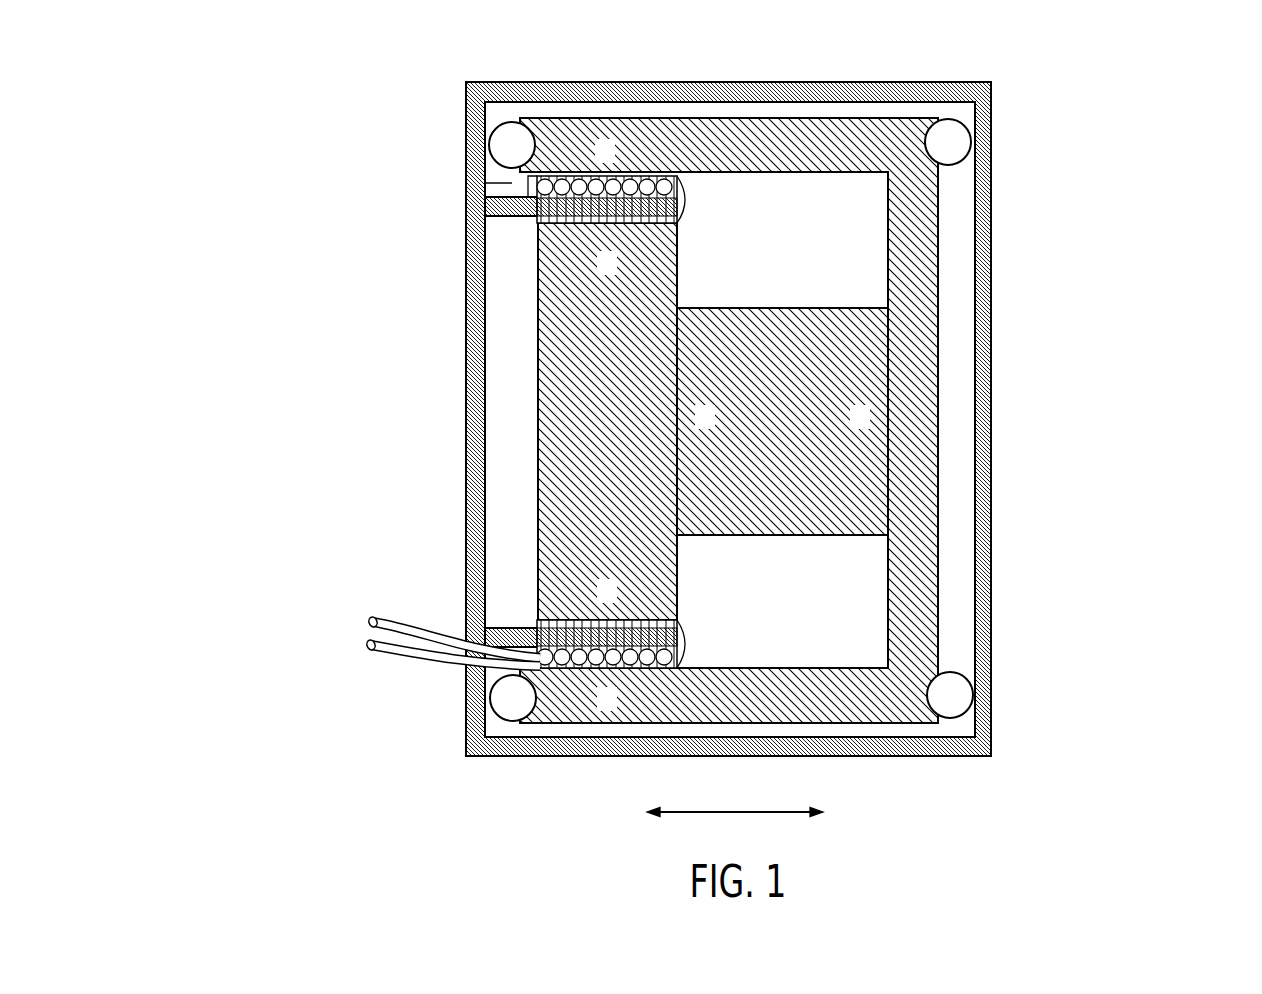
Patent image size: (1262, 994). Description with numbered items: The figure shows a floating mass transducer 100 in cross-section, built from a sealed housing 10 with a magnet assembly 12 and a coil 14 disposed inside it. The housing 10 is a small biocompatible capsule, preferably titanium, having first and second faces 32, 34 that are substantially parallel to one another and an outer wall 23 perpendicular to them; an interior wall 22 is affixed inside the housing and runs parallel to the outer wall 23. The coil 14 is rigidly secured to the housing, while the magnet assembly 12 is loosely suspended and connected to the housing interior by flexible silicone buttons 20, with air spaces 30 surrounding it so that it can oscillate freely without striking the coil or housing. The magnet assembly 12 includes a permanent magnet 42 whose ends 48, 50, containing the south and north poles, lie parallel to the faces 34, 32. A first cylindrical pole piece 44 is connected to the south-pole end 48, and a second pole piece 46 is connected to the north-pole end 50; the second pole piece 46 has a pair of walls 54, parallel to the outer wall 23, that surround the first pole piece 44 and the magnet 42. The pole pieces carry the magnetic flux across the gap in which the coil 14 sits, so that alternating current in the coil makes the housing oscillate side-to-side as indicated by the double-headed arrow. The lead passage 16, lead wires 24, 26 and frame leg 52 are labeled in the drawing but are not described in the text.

The transducer 100 is at (697, 425).
The sealed housing 10 is at (732, 424).
The magnet assembly 12 is at (960, 593).
The coil 14 is at (575, 178).
The lead opening 16 is at (485, 183).
The silicone buttons 20 is at (955, 143).
The interior wall 22 is at (506, 217).
The outer wall 23 is at (712, 82).
The lead wire 24 is at (380, 650).
The lead wire 26 is at (460, 670).
The air spaces 30 is at (872, 108).
The first face 32 is at (992, 108).
The second face 34 is at (466, 100).
The permanent magnet 42 is at (797, 515).
The first cylindrical pole piece 44 is at (575, 493).
The second pole piece 46 is at (816, 420).
The end containing the south pole 48 is at (686, 301).
The end containing the north pole 50 is at (880, 301).
The frame leg 52 is at (920, 225).
The walls 54 is at (797, 160).